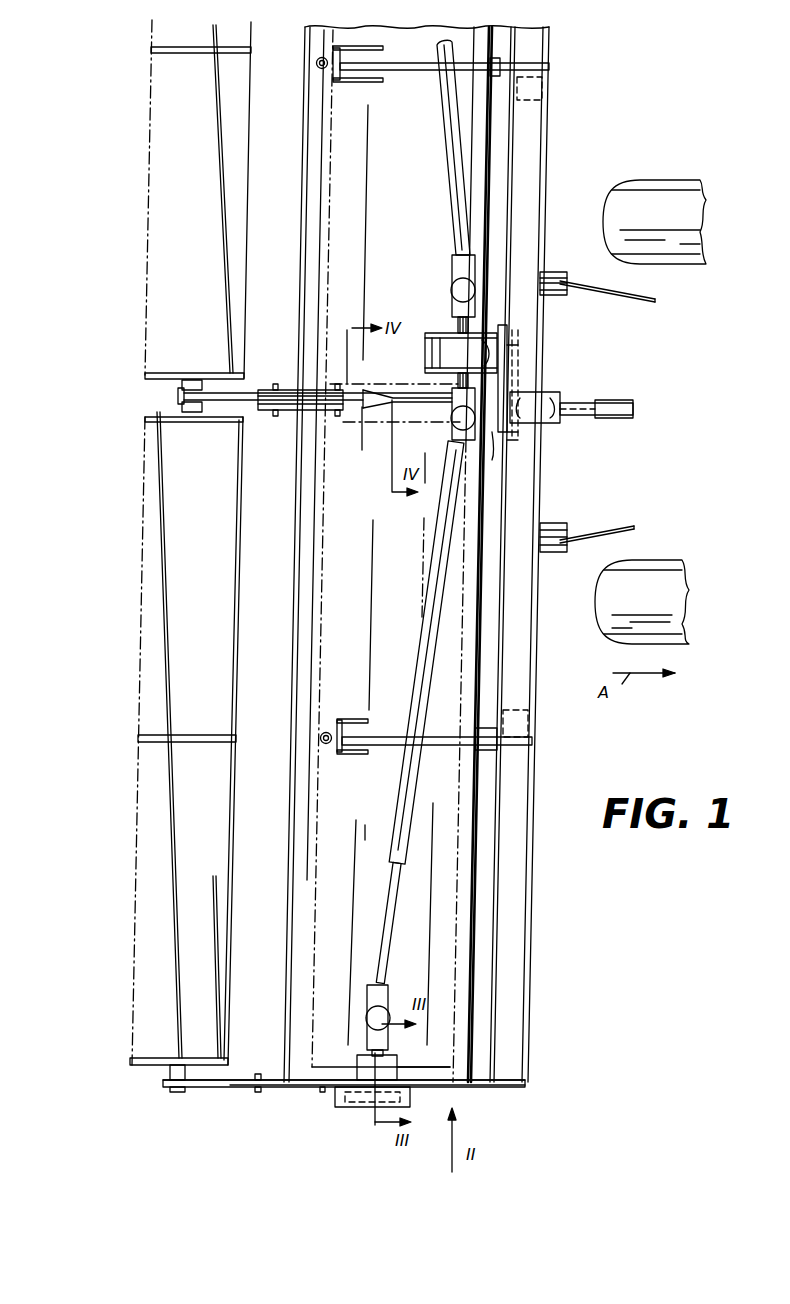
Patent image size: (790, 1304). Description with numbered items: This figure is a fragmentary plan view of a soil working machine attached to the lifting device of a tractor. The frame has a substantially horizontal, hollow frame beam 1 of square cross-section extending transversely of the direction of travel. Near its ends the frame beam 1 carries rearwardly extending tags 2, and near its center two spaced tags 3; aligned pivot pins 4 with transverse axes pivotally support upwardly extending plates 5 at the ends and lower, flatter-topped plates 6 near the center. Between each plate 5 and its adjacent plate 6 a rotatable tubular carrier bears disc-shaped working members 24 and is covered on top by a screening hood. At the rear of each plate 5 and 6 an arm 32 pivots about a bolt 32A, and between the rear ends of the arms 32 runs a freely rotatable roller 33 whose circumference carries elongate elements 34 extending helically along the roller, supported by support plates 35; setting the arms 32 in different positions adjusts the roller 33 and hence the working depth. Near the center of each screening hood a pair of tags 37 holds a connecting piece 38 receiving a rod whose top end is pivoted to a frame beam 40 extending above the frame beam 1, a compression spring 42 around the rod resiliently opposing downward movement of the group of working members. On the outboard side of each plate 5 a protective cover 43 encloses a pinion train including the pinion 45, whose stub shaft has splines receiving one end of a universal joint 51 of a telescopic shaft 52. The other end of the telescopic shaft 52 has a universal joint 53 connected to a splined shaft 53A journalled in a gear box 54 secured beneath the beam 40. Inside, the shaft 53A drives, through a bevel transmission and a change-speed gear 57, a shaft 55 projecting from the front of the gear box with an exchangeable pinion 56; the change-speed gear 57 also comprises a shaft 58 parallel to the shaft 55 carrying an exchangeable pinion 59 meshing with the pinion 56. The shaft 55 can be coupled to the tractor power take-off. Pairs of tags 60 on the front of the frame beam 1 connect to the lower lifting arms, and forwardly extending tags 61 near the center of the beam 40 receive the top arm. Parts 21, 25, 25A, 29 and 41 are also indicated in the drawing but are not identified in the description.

The frame beam 1 is at (534, 907).
The tags 2 is at (518, 1090).
The spaced tags 3 is at (500, 434).
The pivot pins 4 is at (468, 1088).
The plates 5 is at (298, 1090).
The plates 6 is at (357, 412).
The frame upright 21 is at (345, 172).
The disc-shaped working members 24 is at (330, 238).
The upper cross bar 25 is at (205, 54).
The pin 25A is at (276, 384).
The tie rod 29 is at (430, 70).
The arm 32 is at (235, 395).
The bolt 32A is at (342, 385).
The roller 33 is at (148, 153).
The elongate elements 34 is at (224, 303).
The support plates 35 is at (230, 424).
The tags 37 is at (376, 82).
The connecting piece 38 is at (360, 48).
The frame beam 40 is at (525, 512).
The clamp 41 is at (545, 88).
The compression spring 42 is at (304, 68).
The protective cover 43 is at (348, 1104).
The pinion 45 is at (362, 1108).
The universal joint 51 is at (366, 1018).
The telescopic shaft 52 is at (446, 150).
The universal joint 53 is at (452, 288).
The shaft 53A is at (446, 322).
The gear box 54 is at (426, 348).
The shaft 55 is at (545, 380).
The exchangeable pinion 56 is at (540, 438).
The change-speed gear 57 is at (520, 335).
The shaft 58 is at (502, 328).
The exchangeable pinion 59 is at (530, 355).
The tags 60 is at (555, 274).
The tags 61 is at (562, 400).